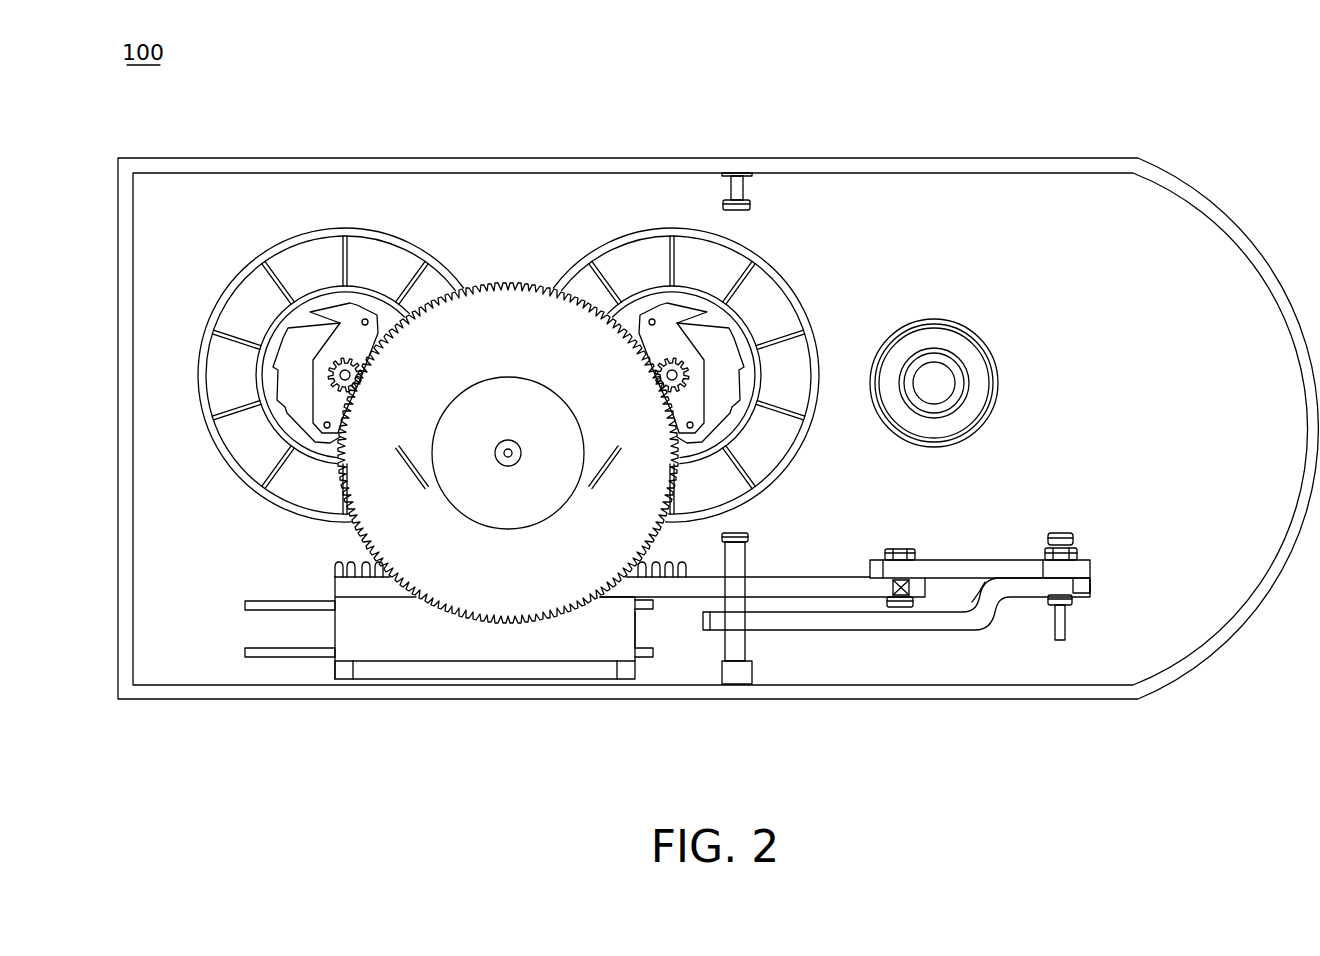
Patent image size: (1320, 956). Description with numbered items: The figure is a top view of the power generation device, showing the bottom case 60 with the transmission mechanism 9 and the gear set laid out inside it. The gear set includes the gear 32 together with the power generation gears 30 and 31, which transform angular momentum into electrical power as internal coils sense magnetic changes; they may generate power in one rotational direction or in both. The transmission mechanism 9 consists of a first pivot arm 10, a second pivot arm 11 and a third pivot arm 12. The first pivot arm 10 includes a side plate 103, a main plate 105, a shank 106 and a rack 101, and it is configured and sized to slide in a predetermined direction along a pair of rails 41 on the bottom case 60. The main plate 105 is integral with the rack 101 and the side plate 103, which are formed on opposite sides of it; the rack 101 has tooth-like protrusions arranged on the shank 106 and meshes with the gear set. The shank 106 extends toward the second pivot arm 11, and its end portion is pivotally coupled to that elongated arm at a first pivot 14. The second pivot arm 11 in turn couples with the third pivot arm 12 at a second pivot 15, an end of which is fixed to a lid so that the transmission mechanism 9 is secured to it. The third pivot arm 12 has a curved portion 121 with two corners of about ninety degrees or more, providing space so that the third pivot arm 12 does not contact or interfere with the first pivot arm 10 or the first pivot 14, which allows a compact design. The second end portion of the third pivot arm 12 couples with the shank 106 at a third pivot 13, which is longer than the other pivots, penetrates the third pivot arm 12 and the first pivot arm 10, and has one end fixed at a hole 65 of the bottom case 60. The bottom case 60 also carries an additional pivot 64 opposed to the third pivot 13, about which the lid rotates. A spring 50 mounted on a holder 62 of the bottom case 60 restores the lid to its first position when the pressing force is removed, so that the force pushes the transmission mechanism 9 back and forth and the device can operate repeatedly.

The bottom case 60 is at (925, 158).
The power generation gear 31 is at (343, 227).
The power generation gear 30 is at (672, 227).
The gear 32 is at (487, 284).
The pivot 64 is at (737, 172).
The spring 50 is at (960, 330).
The holder 62 is at (970, 384).
The first pivot arm 10 is at (302, 631).
The shank 106 is at (848, 577).
The rack 101 is at (335, 566).
The side plate 103 is at (483, 679).
The rails 41 is at (278, 657).
The main plate 105 is at (637, 628).
The third pivot 13 is at (748, 560).
The hole 65 is at (738, 684).
The third pivot arm 12 is at (848, 630).
The curved portion 121 is at (985, 605).
The second pivot arm 11 is at (995, 560).
The first pivot 14 is at (905, 548).
The second pivot 15 is at (1060, 640).
The transmission mechanism 9 is at (1104, 590).